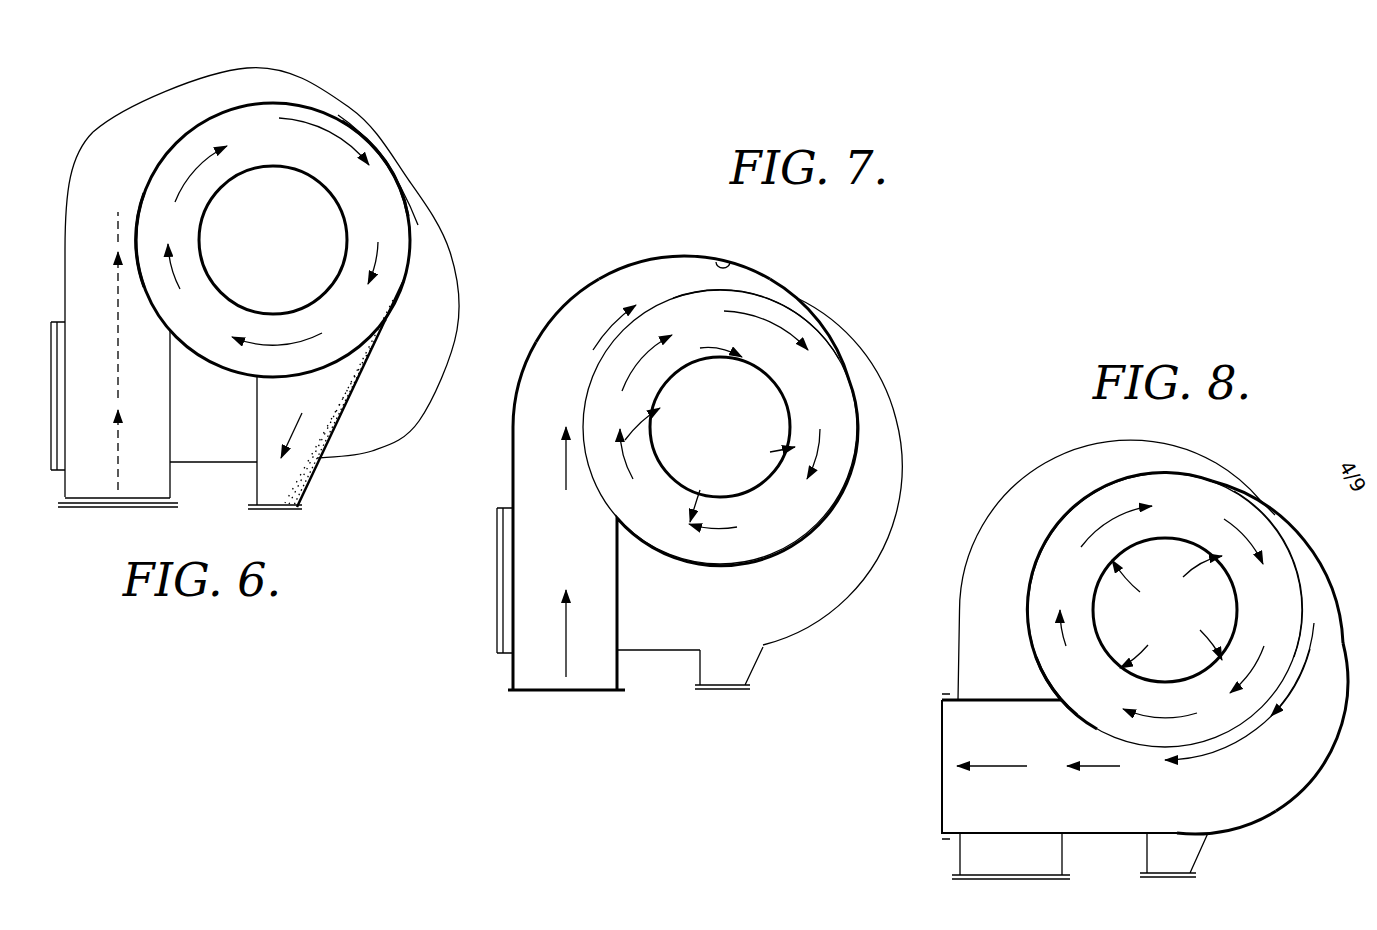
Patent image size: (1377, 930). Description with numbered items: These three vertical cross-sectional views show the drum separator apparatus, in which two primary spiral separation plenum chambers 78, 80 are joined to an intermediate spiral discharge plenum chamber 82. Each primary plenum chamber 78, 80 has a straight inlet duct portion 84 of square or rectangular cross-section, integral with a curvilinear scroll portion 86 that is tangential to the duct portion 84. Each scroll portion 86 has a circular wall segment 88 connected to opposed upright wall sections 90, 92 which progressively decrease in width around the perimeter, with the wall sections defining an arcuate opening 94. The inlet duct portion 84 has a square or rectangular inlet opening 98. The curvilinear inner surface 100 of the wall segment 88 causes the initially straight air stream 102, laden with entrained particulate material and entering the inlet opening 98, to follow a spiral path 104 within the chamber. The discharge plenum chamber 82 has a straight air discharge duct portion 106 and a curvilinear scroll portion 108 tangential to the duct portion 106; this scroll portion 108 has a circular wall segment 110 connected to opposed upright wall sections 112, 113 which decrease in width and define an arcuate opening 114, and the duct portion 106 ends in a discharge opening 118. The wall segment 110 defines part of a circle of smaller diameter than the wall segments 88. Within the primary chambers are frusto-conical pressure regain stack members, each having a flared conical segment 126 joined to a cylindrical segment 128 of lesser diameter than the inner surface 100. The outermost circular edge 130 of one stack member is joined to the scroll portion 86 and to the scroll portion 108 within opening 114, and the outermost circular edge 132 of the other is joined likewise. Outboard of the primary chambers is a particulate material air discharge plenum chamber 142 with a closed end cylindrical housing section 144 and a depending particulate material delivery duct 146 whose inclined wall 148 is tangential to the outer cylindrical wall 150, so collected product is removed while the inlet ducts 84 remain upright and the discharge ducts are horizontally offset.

In FIG. 8, the primary spiral separation plenum chamber 78 is at (1032, 471).
In FIG. 6, the primary spiral separation plenum chamber 80 is at (82, 147).
In FIG. 7, the primary spiral separation plenum chamber 80 is at (552, 317).
In FIG. 6, the spiral discharge plenum chamber 82 is at (442, 205).
In FIG. 7, the spiral discharge plenum chamber 82 is at (895, 384).
In FIG. 8, the spiral discharge plenum chamber 82 is at (1333, 572).
In FIG. 6, the inlet duct portion 84 is at (93, 486).
In FIG. 7, the inlet duct portion 84 is at (527, 668).
In FIG. 8, the inlet duct portion 84 is at (968, 860).
In FIG. 7, the curvilinear scroll portion 86 is at (532, 350).
In FIG. 7, the circular wall segment 88 is at (589, 262).
In FIG. 7, the upright wall section 90 is at (681, 257).
In FIG. 6, the upright wall section 92 is at (298, 86).
In FIG. 8, the upright wall section 92 is at (1178, 460).
In FIG. 7, the arcuate opening 94 is at (765, 300).
In FIG. 7, the inlet opening 98 is at (570, 692).
In FIG. 7, the curvilinear inner surface 100 is at (731, 264).
In FIG. 6, the air stream 102 is at (122, 455).
In FIG. 7, the air stream 102 is at (566, 505).
In FIG. 6, the spiral path 104 is at (232, 162).
In FIG. 7, the spiral path 104 is at (578, 348).
In FIG. 8, the spiral path 104 is at (1187, 612).
In FIG. 6, the air discharge duct portion 106 is at (62, 392).
In FIG. 7, the air discharge duct portion 106 is at (506, 580).
In FIG. 8, the air discharge duct portion 106 is at (958, 797).
In FIG. 8, the curvilinear scroll portion 108 is at (1313, 727).
In FIG. 8, the circular wall segment 110 is at (1108, 490).
In FIG. 8, the upright wall section 112 is at (1269, 776).
In FIG. 6, the upright wall section 113 is at (428, 364).
In FIG. 7, the upright wall section 113 is at (846, 577).
In FIG. 8, the arcuate opening 114 is at (1106, 728).
In FIG. 8, the discharge opening 118 is at (940, 718).
In FIG. 6, the flared conical segment 126 is at (374, 187).
In FIG. 7, the flared conical segment 126 is at (746, 549).
In FIG. 8, the flared conical segment 126 is at (1050, 662).
In FIG. 6, the cylindrical segment 128 is at (318, 187).
In FIG. 7, the cylindrical segment 128 is at (690, 360).
In FIG. 8, the cylindrical segment 128 is at (1236, 615).
In FIG. 8, the outermost circular edge 130 is at (1274, 527).
In FIG. 7, the outermost circular edge 132 is at (791, 312).
In FIG. 6, the particulate material air discharge plenum chamber 142 is at (344, 108).
In FIG. 6, the closed end cylindrical housing section 144 is at (139, 216).
In FIG. 6, the particulate material delivery duct 146 is at (262, 415).
In FIG. 7, the particulate material delivery duct 146 is at (741, 664).
In FIG. 8, the particulate material delivery duct 146 is at (1190, 860).
In FIG. 6, the inclined wall 148 is at (319, 466).
In FIG. 6, the outer cylindrical wall 150 is at (168, 151).